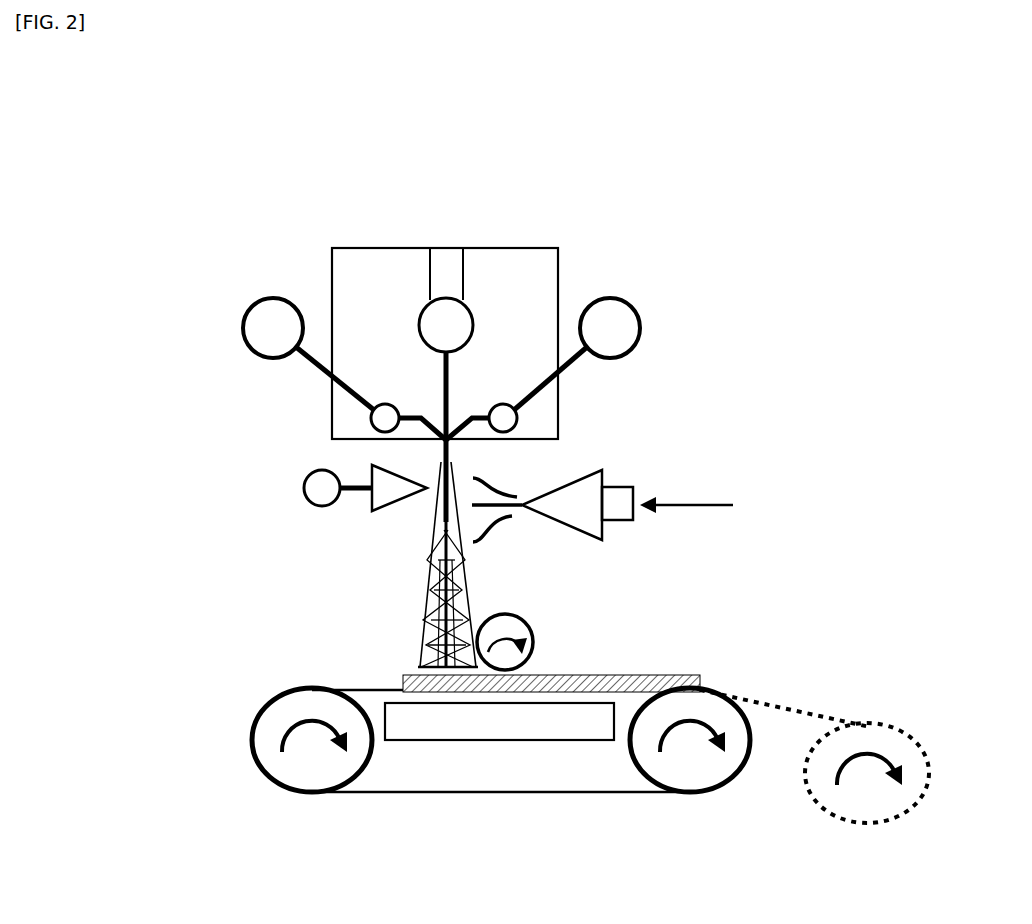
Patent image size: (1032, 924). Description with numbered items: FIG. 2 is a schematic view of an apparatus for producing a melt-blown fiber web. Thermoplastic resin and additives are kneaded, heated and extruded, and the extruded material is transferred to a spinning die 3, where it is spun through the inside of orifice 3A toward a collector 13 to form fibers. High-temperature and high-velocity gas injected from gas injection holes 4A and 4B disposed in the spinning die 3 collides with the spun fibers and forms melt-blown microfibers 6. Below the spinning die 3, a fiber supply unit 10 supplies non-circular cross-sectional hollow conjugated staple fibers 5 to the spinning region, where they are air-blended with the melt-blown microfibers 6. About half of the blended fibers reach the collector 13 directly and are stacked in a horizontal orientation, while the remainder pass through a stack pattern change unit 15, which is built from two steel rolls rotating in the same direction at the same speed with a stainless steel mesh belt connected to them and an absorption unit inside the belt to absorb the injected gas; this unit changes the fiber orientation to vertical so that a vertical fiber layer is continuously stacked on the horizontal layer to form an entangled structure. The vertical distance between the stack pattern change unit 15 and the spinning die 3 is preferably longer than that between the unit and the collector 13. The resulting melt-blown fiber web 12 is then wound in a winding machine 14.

The spinning die 3 is at (468, 354).
The inside of orifice 3A is at (365, 293).
The high-temperature and high-velocity gas injection hole 4A is at (263, 313).
The high-temperature and high-velocity gas injection hole 4B is at (624, 313).
The non-circular cross-sectional hollow conjugated staple fibers 5 is at (552, 523).
The melt-blown microfibers 6 is at (470, 457).
The fiber supply unit 10 is at (686, 492).
The melt-blown fiber web 12 is at (394, 679).
The collector 13 is at (501, 740).
The winding machine 14 is at (814, 749).
The stack pattern change unit 15 is at (578, 634).